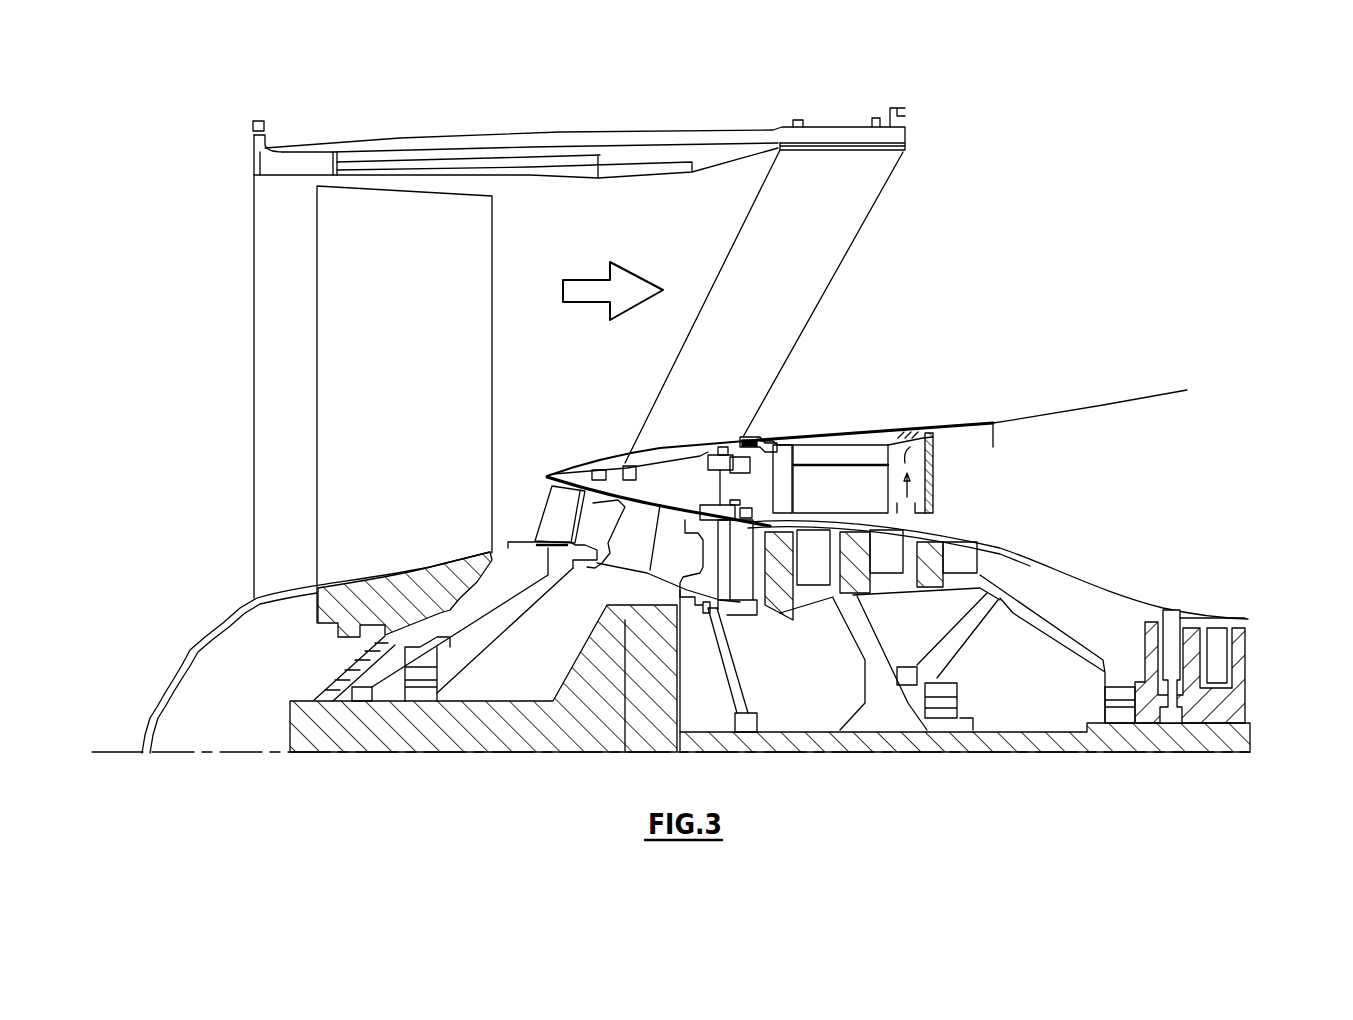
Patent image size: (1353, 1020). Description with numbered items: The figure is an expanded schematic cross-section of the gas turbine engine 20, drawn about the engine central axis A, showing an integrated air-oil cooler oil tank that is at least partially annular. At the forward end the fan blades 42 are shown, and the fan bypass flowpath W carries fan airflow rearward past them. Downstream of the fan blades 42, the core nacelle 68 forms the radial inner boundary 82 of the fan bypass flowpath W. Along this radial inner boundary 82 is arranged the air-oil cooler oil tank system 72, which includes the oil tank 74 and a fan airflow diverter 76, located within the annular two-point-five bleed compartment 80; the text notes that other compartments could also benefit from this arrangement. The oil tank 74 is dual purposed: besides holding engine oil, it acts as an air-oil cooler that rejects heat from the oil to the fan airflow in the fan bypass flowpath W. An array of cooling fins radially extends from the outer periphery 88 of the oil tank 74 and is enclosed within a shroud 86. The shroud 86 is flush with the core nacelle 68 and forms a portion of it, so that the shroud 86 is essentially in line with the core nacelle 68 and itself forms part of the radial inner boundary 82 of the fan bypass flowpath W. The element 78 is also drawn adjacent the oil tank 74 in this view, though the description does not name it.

The gas turbine engine 20 is at (1240, 463).
The fan blades 42 is at (403, 381).
The core nacelle 68 is at (1152, 398).
The air-oil cooler oil tank system 72 is at (853, 356).
The oil tank 74 is at (837, 453).
The fan airflow diverter 76 is at (782, 428).
The aft bulkhead 78 is at (936, 473).
The 2.5 bleed compartment 80 is at (783, 478).
The radial inner boundary 82 is at (1072, 403).
The shroud 86 is at (829, 437).
The outer periphery 88 is at (880, 443).
The fan bypass flowpath W is at (574, 280).
The engine central axis A is at (200, 753).